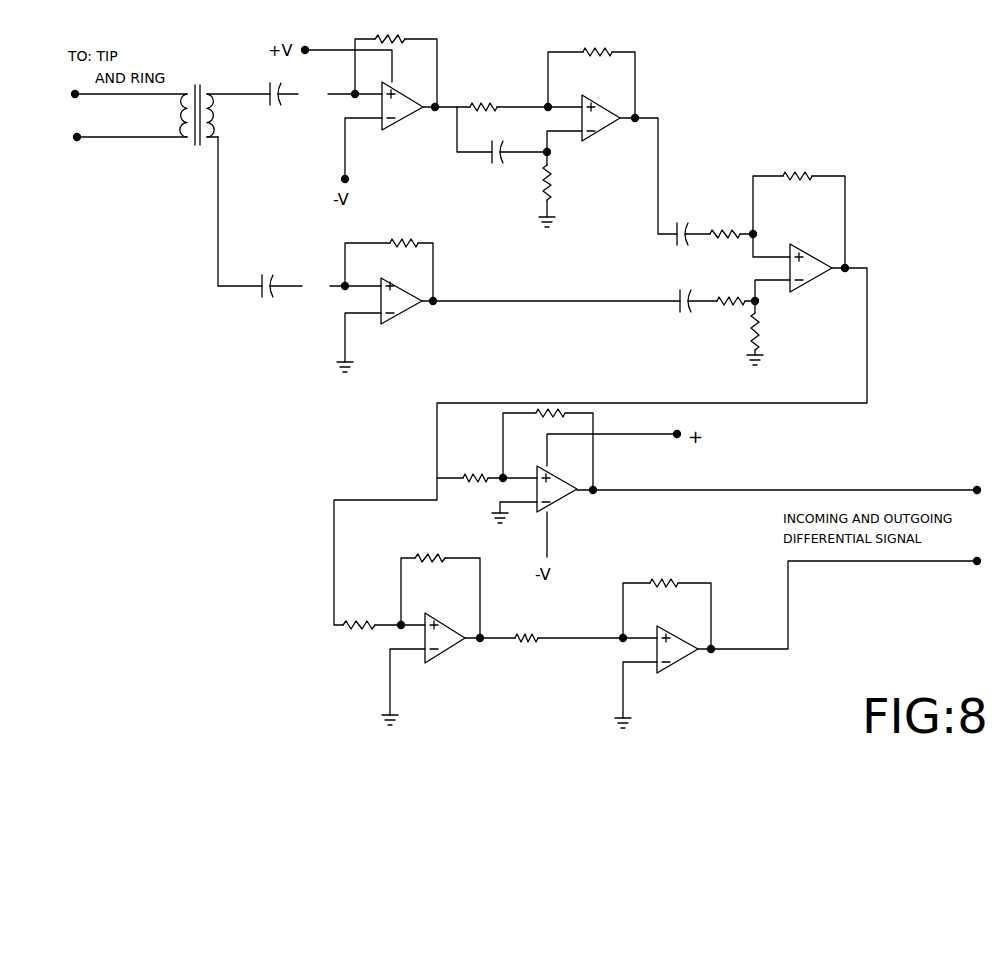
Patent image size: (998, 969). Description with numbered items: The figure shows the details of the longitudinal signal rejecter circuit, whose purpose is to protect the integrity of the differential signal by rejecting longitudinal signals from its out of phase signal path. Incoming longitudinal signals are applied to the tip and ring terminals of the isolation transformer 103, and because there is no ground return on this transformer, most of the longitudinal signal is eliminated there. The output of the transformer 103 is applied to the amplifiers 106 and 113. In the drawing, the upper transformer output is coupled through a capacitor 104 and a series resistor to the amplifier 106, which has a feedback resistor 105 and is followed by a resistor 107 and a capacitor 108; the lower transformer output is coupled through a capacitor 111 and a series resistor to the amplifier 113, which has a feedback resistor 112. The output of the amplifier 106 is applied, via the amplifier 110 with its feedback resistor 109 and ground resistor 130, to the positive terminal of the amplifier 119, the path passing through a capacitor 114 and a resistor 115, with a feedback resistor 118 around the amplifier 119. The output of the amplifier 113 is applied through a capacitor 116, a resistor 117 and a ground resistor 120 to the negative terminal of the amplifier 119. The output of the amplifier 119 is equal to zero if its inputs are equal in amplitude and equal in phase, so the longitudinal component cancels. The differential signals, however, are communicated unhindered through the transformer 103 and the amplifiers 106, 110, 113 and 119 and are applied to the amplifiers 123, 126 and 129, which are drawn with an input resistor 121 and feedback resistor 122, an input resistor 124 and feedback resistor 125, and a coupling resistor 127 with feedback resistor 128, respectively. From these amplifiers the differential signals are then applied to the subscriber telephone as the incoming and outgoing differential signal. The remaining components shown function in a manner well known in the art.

The isolation transformer 103 is at (197, 142).
The capacitor 104 is at (272, 117).
The feedback resistor 105 is at (396, 62).
The amplifier 106 is at (402, 119).
The resistor 107 is at (484, 96).
The capacitor 108 is at (495, 162).
The feedback resistor 109 is at (591, 67).
The amplifier 110 is at (603, 130).
The capacitor 111 is at (258, 300).
The feedback resistor 112 is at (389, 263).
The amplifier 113 is at (407, 310).
The capacitor 114 is at (682, 221).
The resistor 115 is at (725, 226).
The capacitor 116 is at (676, 314).
The resistor 117 is at (731, 295).
The feedback resistor 118 is at (799, 210).
The amplifier 119 is at (822, 273).
The resistor 120 is at (771, 331).
The resistor 121 is at (477, 469).
The feedback resistor 122 is at (539, 418).
The amplifier 123 is at (565, 497).
The resistor 124 is at (359, 618).
The feedback resistor 125 is at (440, 587).
The amplifier 126 is at (448, 650).
The resistor 127 is at (529, 650).
The feedback resistor 128 is at (667, 606).
The amplifier 129 is at (683, 663).
The resistor 130 is at (557, 182).